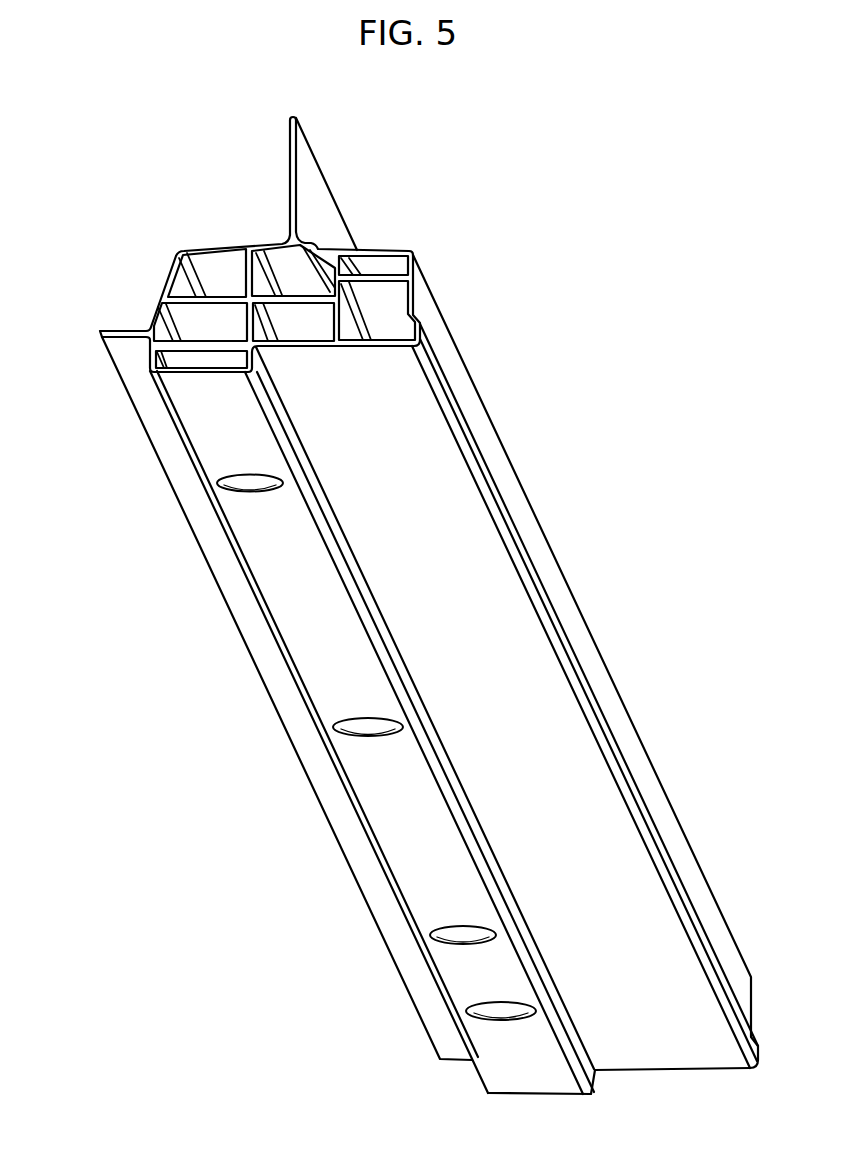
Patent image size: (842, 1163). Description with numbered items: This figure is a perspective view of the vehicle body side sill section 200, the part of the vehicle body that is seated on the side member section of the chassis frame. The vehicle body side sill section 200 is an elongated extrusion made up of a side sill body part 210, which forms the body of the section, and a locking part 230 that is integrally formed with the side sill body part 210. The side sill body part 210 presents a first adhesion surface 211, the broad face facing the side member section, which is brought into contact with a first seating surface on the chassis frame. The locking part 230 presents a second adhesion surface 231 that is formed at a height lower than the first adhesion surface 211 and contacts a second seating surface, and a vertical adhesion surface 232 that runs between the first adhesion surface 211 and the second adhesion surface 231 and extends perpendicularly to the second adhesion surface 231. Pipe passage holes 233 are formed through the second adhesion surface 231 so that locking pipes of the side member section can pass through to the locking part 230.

The vehicle body side sill section 200 is at (135, 106).
The side sill body part 210 is at (375, 292).
The first adhesion surface 211 is at (408, 432).
The locking part 230 is at (213, 270).
The second adhesion surface 231 is at (194, 393).
The vertical adhesion surface 232 is at (330, 512).
The pipe passage hole 233 is at (248, 489).